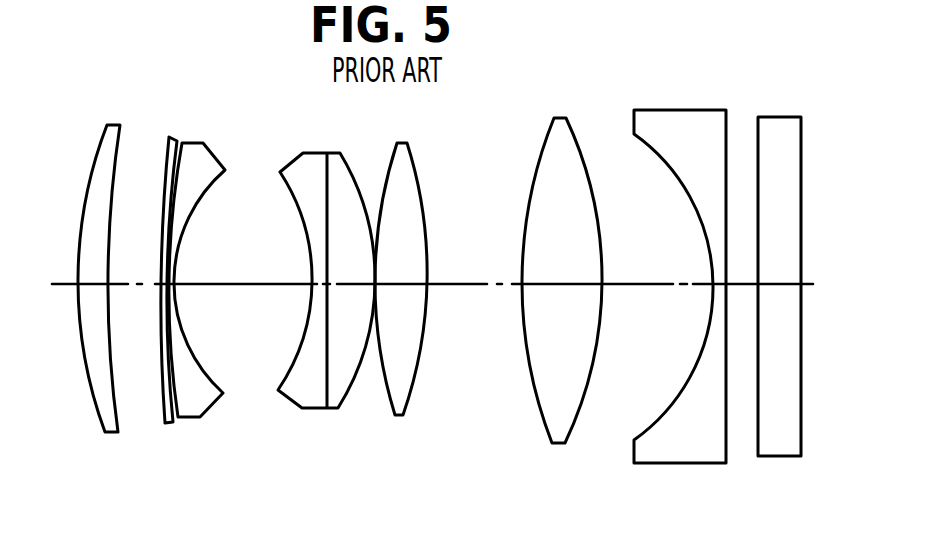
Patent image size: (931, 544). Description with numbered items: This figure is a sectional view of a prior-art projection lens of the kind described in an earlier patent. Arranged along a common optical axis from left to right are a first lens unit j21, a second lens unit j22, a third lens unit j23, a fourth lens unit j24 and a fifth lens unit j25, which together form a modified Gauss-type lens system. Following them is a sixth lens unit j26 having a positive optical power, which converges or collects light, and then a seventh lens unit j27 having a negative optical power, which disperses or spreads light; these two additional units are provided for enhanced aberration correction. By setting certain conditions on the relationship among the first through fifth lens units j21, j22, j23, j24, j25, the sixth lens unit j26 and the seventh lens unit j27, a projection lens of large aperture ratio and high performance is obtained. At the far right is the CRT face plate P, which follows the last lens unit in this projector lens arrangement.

The first lens unit j21 is at (107, 427).
The second lens unit j22 is at (167, 415).
The third lens unit j23 is at (193, 407).
The fourth lens unit j24 is at (372, 447).
The fifth lens unit j25 is at (395, 418).
The sixth lens unit j26 is at (560, 424).
The seventh lens unit j27 is at (682, 453).
The CRT face plate P is at (777, 444).